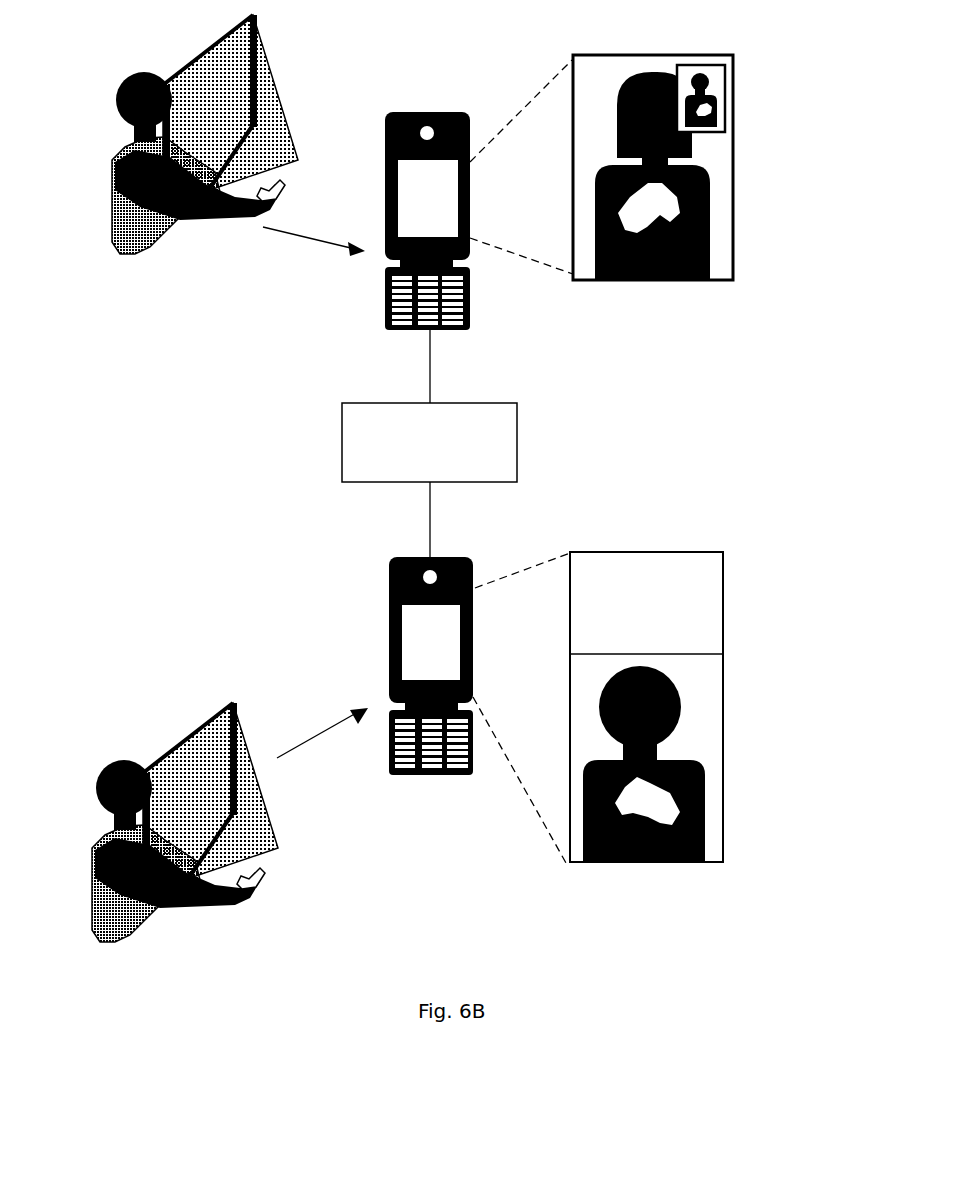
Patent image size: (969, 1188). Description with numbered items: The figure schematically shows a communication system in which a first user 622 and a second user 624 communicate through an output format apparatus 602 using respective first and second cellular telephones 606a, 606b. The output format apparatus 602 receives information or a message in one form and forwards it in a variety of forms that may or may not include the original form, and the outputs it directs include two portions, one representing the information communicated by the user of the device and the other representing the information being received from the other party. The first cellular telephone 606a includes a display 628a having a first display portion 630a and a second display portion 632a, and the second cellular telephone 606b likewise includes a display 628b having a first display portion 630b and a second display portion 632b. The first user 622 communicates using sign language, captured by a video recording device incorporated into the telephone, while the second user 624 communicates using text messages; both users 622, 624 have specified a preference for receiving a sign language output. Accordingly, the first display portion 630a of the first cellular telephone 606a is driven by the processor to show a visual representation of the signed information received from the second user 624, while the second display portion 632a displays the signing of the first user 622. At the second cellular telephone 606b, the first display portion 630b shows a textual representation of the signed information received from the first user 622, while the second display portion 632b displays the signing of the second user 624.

The output format apparatus 602 is at (342, 442).
The first cellular telephone 606a is at (430, 110).
The second cellular telephone 606b is at (425, 783).
The first user 622 is at (128, 83).
The second user 624 is at (115, 763).
The display 628a is at (432, 200).
The display 628b is at (435, 630).
The first display portion 630a is at (735, 232).
The first display portion 630b is at (725, 730).
The second display portion 632a is at (725, 105).
The second display portion 632b is at (725, 585).